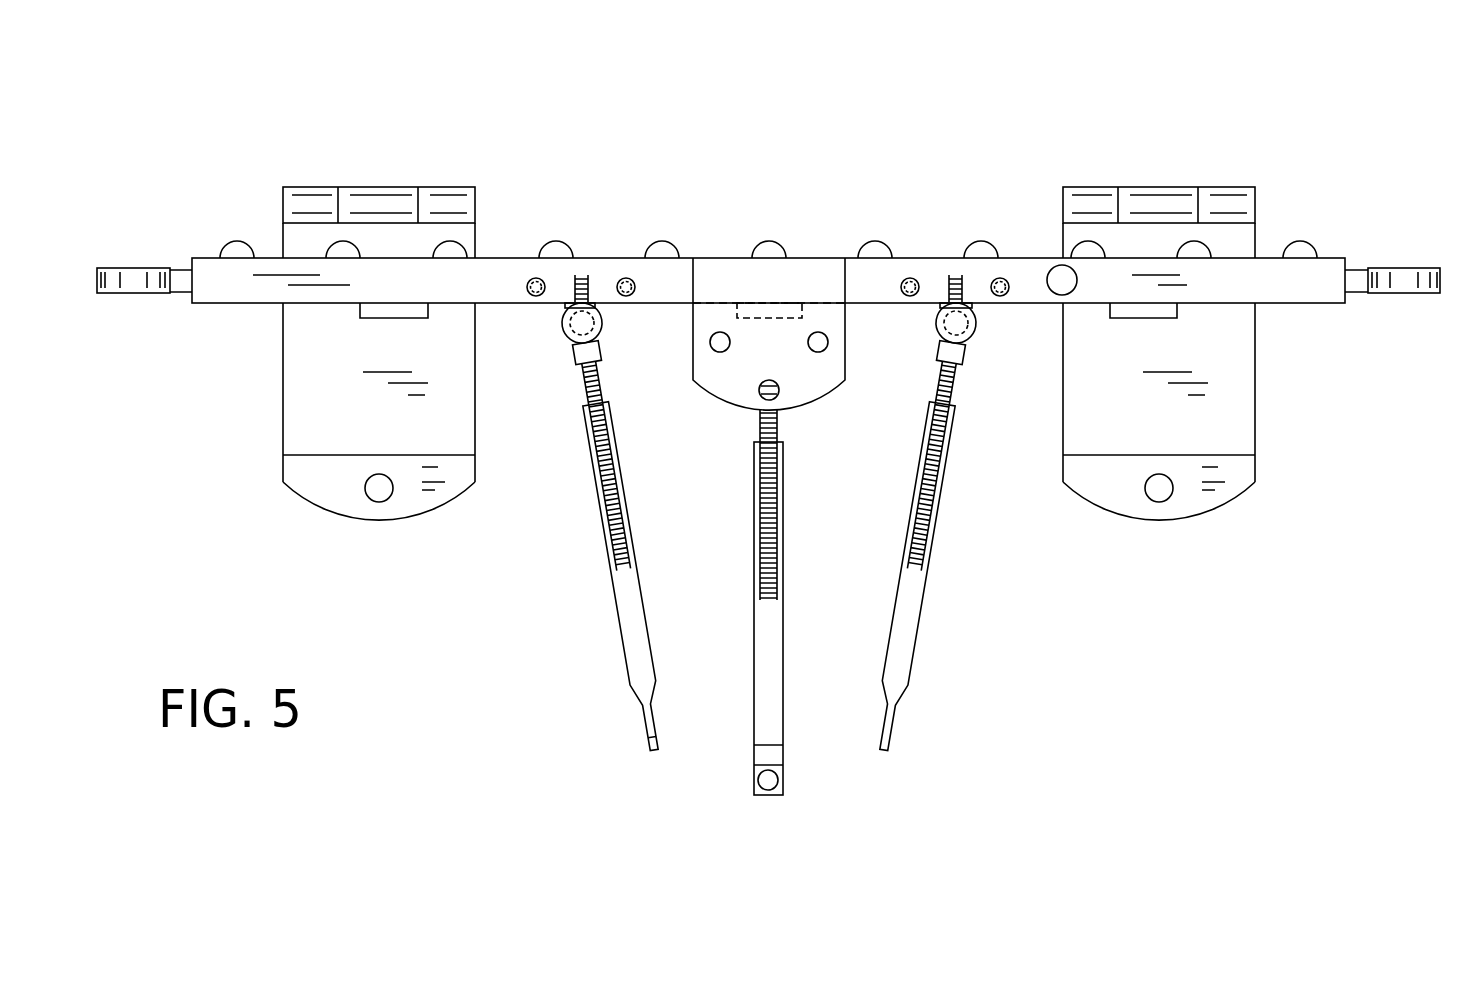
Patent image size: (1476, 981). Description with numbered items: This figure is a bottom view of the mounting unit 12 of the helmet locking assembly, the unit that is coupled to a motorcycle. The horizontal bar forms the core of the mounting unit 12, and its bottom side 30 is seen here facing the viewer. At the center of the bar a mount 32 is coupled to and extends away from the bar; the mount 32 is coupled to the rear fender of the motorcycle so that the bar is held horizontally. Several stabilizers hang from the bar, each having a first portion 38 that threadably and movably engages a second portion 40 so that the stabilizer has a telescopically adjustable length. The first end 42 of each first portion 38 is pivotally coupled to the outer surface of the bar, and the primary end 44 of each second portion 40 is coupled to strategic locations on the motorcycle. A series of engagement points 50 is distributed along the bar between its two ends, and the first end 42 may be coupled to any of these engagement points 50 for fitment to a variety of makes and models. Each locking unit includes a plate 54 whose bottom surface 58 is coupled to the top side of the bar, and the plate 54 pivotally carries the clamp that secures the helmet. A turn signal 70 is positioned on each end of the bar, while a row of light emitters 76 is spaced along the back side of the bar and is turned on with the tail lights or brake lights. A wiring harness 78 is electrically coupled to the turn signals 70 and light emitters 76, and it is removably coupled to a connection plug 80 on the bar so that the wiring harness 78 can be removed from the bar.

The mounting unit 12 is at (1035, 165).
The bottom side 30 is at (498, 273).
The mount 32 is at (688, 277).
The first portion 38 is at (560, 398).
The second portion 40 is at (590, 583).
The first end 42 is at (604, 312).
The primary end 44 is at (645, 752).
The engagement points 50 is at (1000, 280).
The plate 54 is at (300, 375).
The bottom surface 58 is at (1120, 408).
The turn signals 70 is at (120, 275).
The light emitters 76 is at (450, 243).
The wiring harness 78 is at (868, 290).
The connection plug 80 is at (1056, 292).